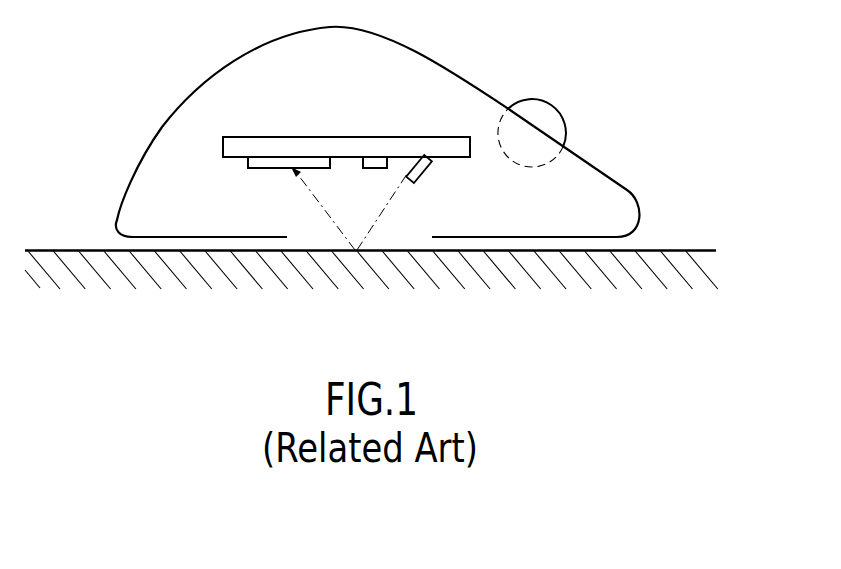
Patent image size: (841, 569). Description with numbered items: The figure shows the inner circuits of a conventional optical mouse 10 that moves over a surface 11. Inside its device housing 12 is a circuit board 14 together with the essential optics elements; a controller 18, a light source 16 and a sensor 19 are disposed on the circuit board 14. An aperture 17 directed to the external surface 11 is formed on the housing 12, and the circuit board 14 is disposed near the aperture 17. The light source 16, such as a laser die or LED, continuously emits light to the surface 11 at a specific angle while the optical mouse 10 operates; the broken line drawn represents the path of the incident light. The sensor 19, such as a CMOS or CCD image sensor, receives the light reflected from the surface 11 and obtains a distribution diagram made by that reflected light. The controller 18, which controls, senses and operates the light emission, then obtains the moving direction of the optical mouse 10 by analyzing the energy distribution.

The optical mouse 10 is at (87, 42).
The surface 11 is at (672, 238).
The device housing 12 is at (162, 128).
The circuit board 14 is at (405, 146).
The light source 16 is at (422, 168).
The aperture 17 is at (301, 252).
The controller 18 is at (377, 162).
The sensor 19 is at (280, 162).